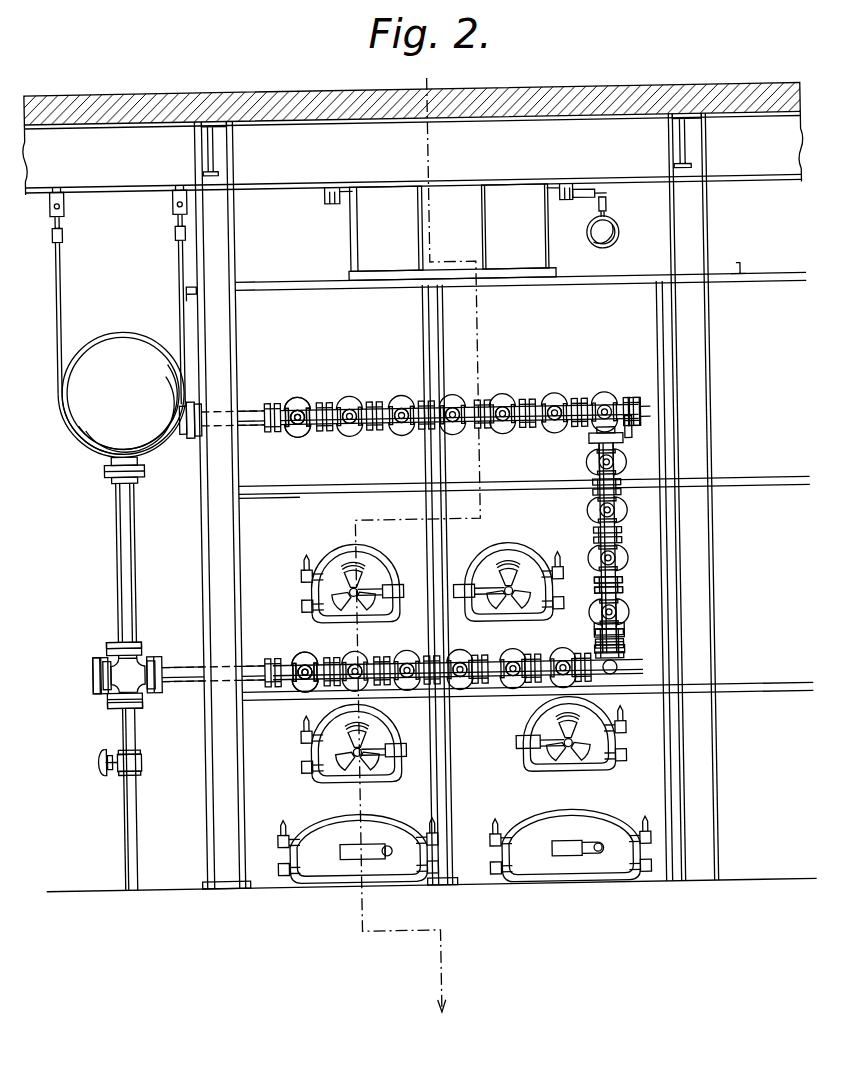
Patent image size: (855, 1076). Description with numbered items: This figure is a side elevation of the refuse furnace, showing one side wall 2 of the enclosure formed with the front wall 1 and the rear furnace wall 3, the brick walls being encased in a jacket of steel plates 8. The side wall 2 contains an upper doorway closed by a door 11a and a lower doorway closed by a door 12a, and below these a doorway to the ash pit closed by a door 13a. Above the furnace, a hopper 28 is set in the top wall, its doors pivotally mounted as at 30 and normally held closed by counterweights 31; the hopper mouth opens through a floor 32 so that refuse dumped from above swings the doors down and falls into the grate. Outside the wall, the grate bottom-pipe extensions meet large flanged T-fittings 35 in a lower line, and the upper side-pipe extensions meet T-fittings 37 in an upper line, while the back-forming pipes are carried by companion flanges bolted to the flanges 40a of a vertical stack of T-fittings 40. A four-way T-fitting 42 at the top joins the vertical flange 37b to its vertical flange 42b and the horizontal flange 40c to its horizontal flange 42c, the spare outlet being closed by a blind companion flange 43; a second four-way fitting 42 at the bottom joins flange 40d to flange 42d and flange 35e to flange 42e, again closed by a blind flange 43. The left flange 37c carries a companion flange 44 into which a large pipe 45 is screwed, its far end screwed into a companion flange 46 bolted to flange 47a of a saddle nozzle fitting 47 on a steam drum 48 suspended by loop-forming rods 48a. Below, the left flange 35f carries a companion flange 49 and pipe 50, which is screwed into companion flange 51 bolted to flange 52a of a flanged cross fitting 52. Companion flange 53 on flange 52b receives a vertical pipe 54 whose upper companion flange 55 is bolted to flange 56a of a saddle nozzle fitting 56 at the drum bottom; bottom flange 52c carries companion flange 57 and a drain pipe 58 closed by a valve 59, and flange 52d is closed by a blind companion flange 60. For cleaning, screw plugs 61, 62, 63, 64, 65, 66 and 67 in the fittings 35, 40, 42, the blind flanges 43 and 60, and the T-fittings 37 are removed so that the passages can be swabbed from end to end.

The front wall 1 is at (195, 538).
The side walls 2 is at (517, 515).
The rear furnace wall 3 is at (418, 557).
The jacket of steel plates 8 is at (300, 518).
The doors 11a is at (342, 566).
The doors 12a is at (330, 755).
The doors 13a is at (330, 830).
The hopper 28 is at (452, 232).
The pivot 30 is at (330, 200).
The counterweights 31 is at (620, 243).
The floor 32 is at (588, 89).
The flanged T-fittings 35 is at (302, 656).
The flange 35e is at (562, 657).
The left hand flange 35f is at (298, 684).
The flanged T-fittings 37 is at (303, 402).
The vertical flange 37b is at (566, 400).
The left hand flange 37c is at (292, 402).
The T-fittings 40 is at (598, 450).
The flanges 40a is at (600, 468).
The horizontal flange 40c is at (624, 441).
The flange 40d is at (615, 632).
The four-way T-fittings 42 is at (608, 405).
The vertical flange 42b is at (583, 400).
The horizontal flange 42c is at (618, 433).
The flange 42d is at (622, 636).
The flange 42e is at (598, 592).
The blind companion flange 43 is at (642, 407).
The companion flange 44 is at (272, 400).
The pipe 45 is at (250, 408).
The companion flange 46 is at (192, 436).
The saddle nozzle fitting 47 is at (185, 432).
The flange 47a is at (200, 434).
The steam drum 48 is at (128, 345).
The loop-forming rods 48a is at (183, 250).
The companion flange 49 is at (268, 685).
The pipe 50 is at (180, 672).
The companion flange 51 is at (152, 676).
The flanged cross fitting 52 is at (138, 660).
The flange 52a is at (148, 686).
The flange 52b is at (110, 640).
The bottom flange 52c is at (108, 698).
The flange 52d is at (100, 684).
The companion flange 53 is at (125, 645).
The vertical pipe 54 is at (116, 576).
The companion flange 55 is at (108, 470).
The saddle nozzle fitting 56 is at (140, 470).
The flange 56a is at (112, 457).
The companion flange 57 is at (108, 704).
The drain pipe 58 is at (132, 738).
The valve 59 is at (113, 760).
The blind companion flange 60 is at (94, 658).
The screw plugs 61 is at (350, 660).
The screw plugs 62 is at (598, 462).
The screw plugs 63 is at (630, 400).
The screw plug 64 is at (655, 414).
The screw plug 65 is at (622, 665).
The screw plug 66 is at (98, 668).
The screw plugs 67 is at (297, 423).